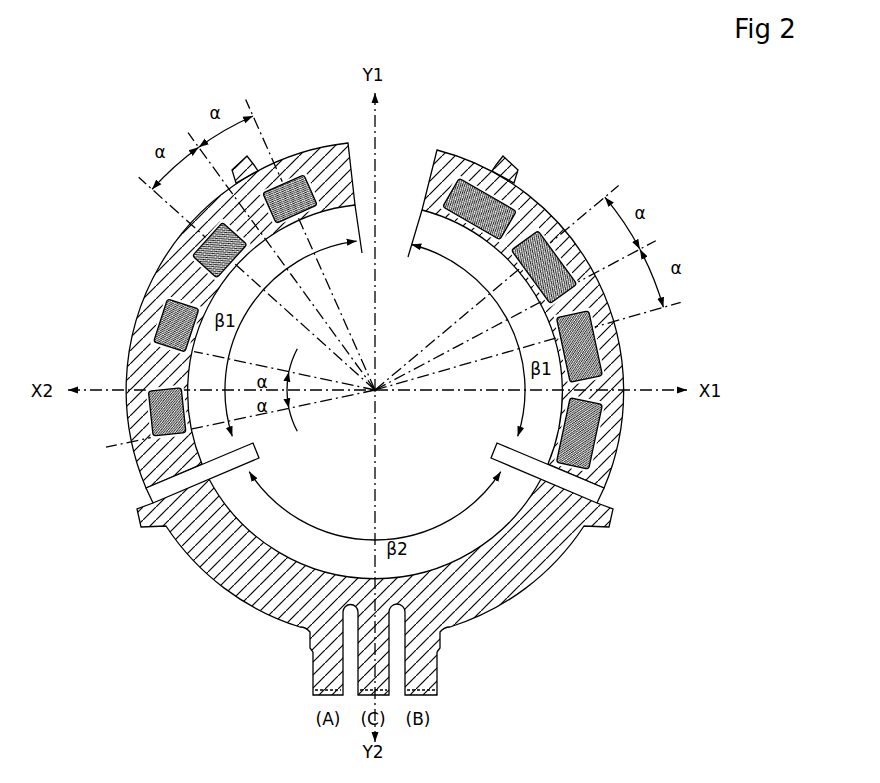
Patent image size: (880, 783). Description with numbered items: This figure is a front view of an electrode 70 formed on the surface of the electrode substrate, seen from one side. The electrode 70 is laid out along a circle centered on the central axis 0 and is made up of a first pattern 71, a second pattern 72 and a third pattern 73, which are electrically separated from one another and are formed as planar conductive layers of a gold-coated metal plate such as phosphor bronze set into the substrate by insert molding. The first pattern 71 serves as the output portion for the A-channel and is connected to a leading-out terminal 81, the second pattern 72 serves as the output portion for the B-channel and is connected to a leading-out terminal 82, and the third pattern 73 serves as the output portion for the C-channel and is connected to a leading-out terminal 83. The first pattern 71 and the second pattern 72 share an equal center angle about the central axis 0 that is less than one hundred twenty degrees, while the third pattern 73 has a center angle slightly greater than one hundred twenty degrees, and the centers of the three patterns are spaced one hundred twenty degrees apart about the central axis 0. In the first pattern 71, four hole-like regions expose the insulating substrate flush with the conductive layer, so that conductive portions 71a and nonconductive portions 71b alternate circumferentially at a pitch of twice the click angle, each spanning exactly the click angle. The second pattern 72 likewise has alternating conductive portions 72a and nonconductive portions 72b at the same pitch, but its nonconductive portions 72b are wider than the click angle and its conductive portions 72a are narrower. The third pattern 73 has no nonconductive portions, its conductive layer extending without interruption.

The central axis 0 is at (378, 394).
The electrode 70 is at (402, 381).
The first pattern 71 is at (195, 276).
The conductive portions 71a is at (333, 206).
The nonconductive portions 71b is at (300, 200).
The second pattern 72 is at (575, 322).
The conductive portions 72a is at (628, 370).
The nonconductive portions 72b is at (600, 338).
The third pattern 73 is at (375, 588).
The leading-out terminal 81 is at (325, 668).
The leading-out terminal 82 is at (426, 678).
The leading-out terminal 83 is at (375, 641).